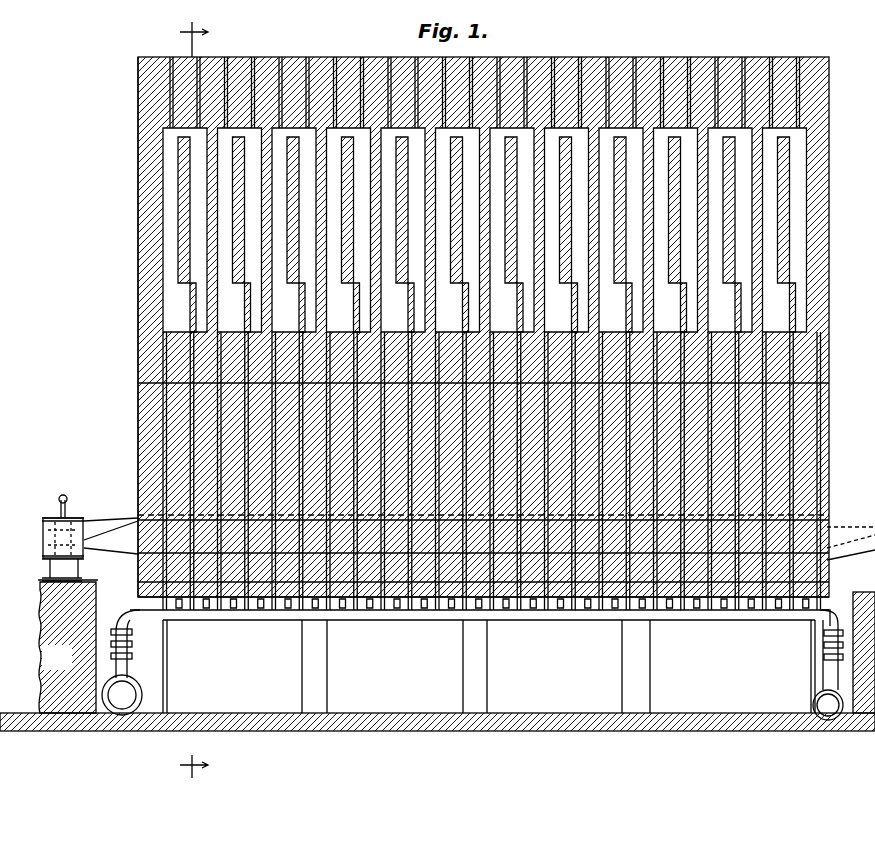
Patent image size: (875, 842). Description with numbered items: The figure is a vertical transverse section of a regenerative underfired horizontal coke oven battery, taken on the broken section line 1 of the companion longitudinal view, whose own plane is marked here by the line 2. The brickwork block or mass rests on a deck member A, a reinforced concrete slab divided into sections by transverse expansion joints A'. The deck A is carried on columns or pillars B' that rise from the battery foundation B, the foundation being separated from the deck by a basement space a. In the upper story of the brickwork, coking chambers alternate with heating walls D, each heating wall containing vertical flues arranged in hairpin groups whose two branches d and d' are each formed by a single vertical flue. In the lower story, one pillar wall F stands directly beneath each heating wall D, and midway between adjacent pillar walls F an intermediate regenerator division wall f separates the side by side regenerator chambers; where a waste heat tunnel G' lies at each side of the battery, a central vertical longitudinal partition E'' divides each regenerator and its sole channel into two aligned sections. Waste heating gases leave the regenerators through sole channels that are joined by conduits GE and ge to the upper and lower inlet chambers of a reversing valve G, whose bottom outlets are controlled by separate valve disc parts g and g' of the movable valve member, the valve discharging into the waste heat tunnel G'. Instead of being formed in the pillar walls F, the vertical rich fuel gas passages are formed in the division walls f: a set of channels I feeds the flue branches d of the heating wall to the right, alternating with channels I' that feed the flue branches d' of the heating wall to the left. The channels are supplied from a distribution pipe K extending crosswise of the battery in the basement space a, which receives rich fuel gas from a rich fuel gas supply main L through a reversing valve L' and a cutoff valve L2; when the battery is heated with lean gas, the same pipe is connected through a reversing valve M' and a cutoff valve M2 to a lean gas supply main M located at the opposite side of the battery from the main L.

The section line 1 is at (0, 36).
The section line 2 is at (179, 397).
The heating wall D is at (0, 172).
The twin flue branch d' is at (485, 194).
The twin flue branch d is at (483, 234).
The intermediate regenerator division wall f is at (0, 380).
The pillar wall F is at (775, 410).
The rich fuel gas channel I is at (477, 475).
The rich fuel gas channel I' is at (428, 510).
The central vertical longitudinal partition E'' is at (492, 594).
The distribution pipe K is at (576, 600).
The battery foundation B is at (437, 670).
The basement space a is at (272, 671).
The deck member A is at (351, 656).
The column or pillar B' is at (315, 666).
The lean gas supply main M is at (122, 688).
The reversing valve M' is at (159, 634).
The cutoff valve M2 is at (132, 656).
The rich fuel gas supply main L is at (839, 680).
The reversing valve L' is at (796, 645).
The cutoff valve L2 is at (836, 630).
The reversing valve G is at (80, 500).
The valve disc part g is at (49, 538).
The valve disc part g' is at (45, 567).
The conduit GE is at (479, 523).
The conduit ge is at (96, 556).
The waste heat tunnel G' is at (67, 647).
The expansion joint A' is at (49, 591).